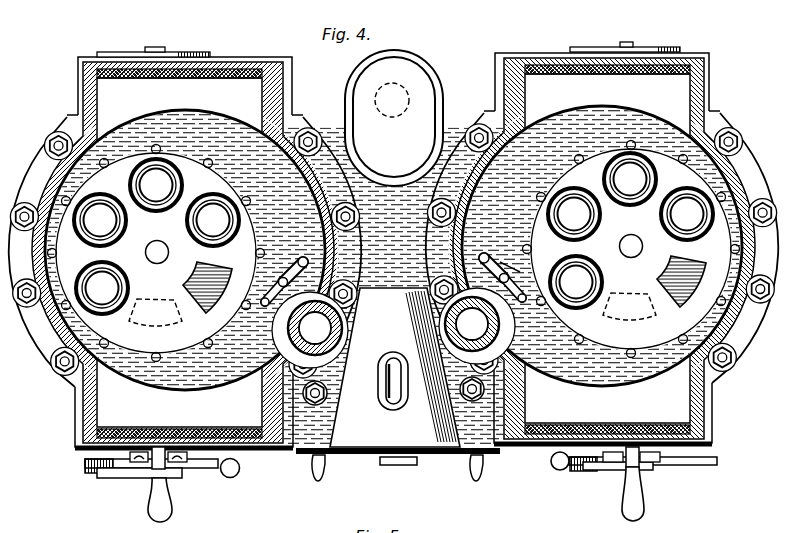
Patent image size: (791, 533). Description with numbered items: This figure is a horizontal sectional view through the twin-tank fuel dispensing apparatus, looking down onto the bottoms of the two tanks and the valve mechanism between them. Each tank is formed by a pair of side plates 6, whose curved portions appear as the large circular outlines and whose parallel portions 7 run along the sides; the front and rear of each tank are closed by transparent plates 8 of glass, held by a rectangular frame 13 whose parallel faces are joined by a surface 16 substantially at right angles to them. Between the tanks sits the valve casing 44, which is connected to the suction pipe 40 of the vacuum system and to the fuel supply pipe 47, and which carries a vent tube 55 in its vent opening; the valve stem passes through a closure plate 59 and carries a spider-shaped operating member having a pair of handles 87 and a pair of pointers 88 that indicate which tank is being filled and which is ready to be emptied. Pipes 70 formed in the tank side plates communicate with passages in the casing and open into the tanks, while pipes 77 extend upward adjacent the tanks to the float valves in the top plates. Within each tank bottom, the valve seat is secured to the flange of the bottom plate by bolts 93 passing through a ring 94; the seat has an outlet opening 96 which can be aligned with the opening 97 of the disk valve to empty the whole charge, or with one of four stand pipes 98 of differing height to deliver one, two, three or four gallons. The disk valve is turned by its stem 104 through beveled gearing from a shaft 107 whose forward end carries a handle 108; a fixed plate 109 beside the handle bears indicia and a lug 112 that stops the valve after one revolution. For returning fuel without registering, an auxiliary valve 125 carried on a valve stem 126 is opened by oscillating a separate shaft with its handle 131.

The side plates 6 is at (748, 190).
The parallel portions 7 is at (290, 100).
The plates 8 is at (238, 72).
The rectangular frame 13 is at (92, 66).
The surface 16 is at (522, 262).
The suction pipe 40 is at (427, 54).
The valve casing 44 is at (397, 300).
The fuel supply pipe 47 is at (374, 84).
The vent tube 55 is at (392, 355).
The closure plate 59 is at (493, 458).
The pipes 70 is at (286, 330).
The pipes 77 is at (328, 397).
The handles 87 is at (316, 480).
The pointers 88 is at (330, 457).
The bolts 93 is at (152, 356).
The ring 94 is at (207, 347).
The outlet opening 96 is at (163, 302).
The opening 97 is at (198, 273).
The stand pipes 98 is at (222, 206).
The stem 104 is at (158, 241).
The shaft 107 is at (154, 448).
The handle 108 is at (148, 508).
The plate 109 is at (207, 470).
The lug 112 is at (100, 478).
The valves 125 is at (272, 258).
The valve stems 126 is at (278, 262).
The handle 131 is at (242, 466).